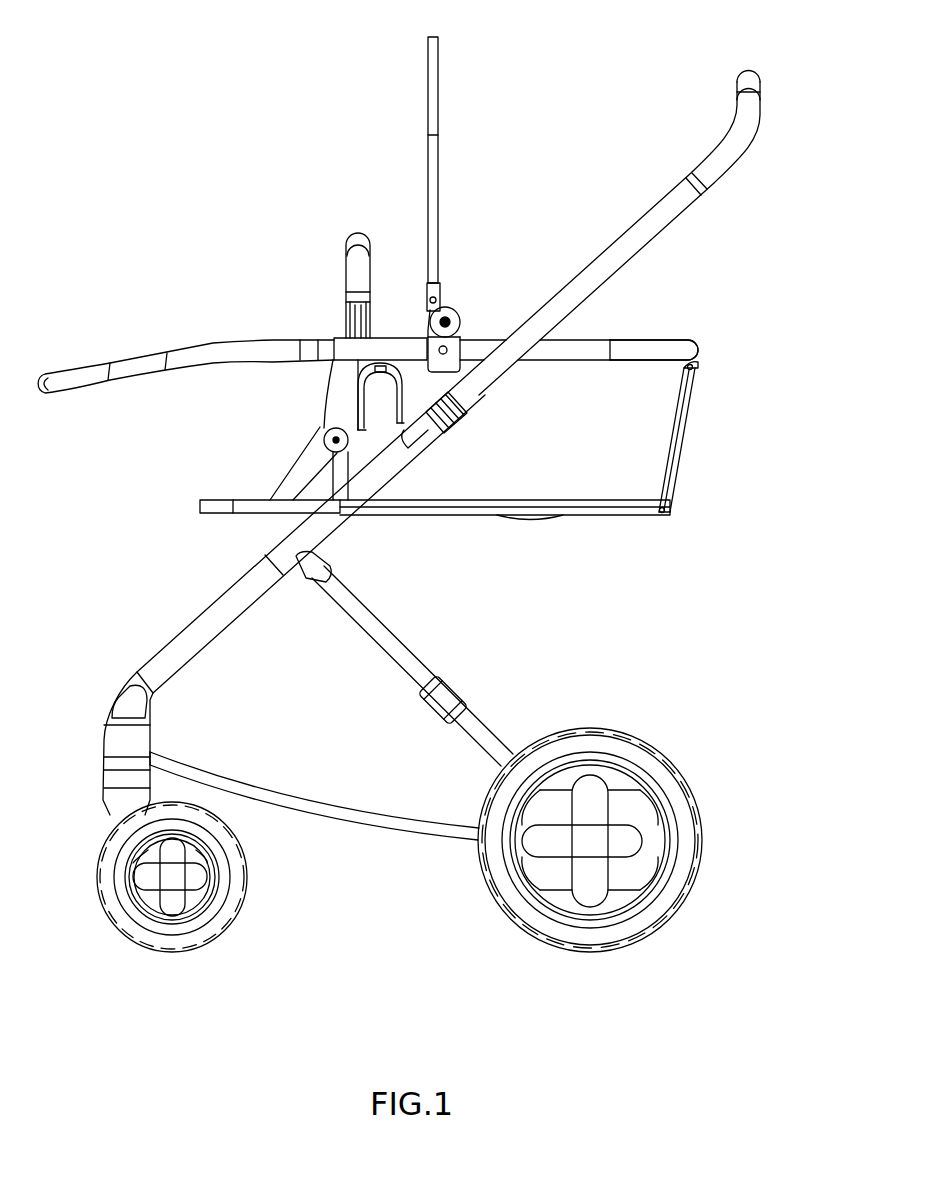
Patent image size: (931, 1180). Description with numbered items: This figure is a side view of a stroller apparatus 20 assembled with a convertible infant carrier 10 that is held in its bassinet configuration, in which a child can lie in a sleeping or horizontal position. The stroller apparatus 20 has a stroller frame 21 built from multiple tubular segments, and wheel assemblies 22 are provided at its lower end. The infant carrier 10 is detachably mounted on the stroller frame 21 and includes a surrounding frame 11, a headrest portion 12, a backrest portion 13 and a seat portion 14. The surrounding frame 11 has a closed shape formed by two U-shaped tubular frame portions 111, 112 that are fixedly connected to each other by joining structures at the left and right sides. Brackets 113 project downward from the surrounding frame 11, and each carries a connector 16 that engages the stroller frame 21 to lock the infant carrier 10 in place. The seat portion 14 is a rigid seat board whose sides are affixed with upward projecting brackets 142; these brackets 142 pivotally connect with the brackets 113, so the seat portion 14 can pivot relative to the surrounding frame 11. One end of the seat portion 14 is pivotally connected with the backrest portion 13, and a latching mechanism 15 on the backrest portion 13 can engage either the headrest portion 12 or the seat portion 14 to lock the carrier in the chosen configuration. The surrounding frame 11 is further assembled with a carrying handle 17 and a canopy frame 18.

The convertible infant carrier 10 is at (712, 387).
The surrounding frame 11 is at (390, 297).
The frame portion 111 is at (213, 357).
The frame portion 112 is at (638, 347).
The bracket 113 is at (345, 415).
The headrest portion 12 is at (677, 443).
The backrest portion 13 is at (602, 505).
The seat portion 14 is at (220, 505).
The bracket 142 is at (317, 473).
The latching mechanism 15 is at (530, 532).
The connector 16 is at (413, 440).
The carrying handle 17 is at (358, 268).
The canopy frame 18 is at (433, 247).
The stroller apparatus 20 is at (291, 617).
The stroller frame 21 is at (620, 257).
The wheel assembly 22 is at (210, 923).